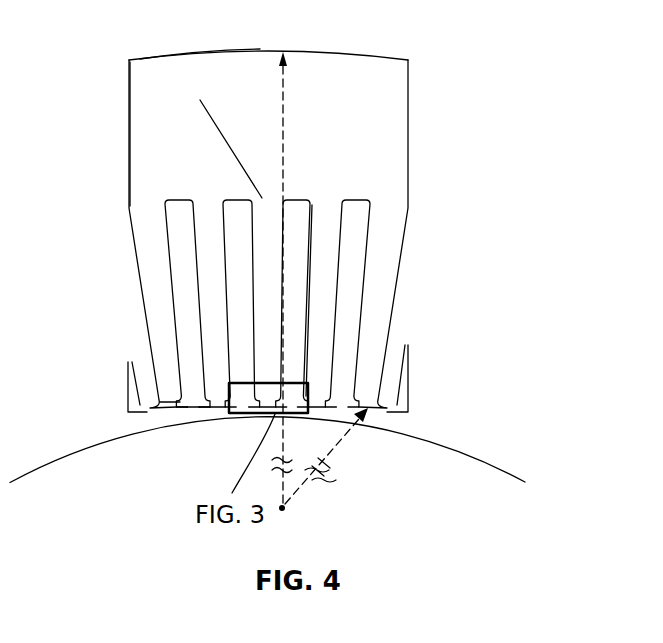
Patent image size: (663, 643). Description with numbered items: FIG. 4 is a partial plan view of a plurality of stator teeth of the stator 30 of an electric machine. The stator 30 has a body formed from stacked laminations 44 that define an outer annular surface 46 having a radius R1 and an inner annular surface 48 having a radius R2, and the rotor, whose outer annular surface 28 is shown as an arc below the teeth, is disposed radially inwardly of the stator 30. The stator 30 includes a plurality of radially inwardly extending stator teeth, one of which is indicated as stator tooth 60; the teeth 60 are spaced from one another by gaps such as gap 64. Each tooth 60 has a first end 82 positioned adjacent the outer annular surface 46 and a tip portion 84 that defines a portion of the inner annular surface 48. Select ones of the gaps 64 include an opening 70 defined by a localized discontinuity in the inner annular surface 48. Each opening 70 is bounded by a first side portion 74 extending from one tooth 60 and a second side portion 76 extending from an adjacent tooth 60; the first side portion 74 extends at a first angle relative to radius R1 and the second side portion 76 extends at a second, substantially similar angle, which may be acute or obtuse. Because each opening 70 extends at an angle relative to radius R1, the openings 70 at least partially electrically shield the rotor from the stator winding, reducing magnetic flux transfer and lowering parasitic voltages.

The outer annular surface 28 is at (501, 468).
The stator 30 is at (512, 135).
The stacked laminations 44 is at (193, 122).
The outer annular surface 46 is at (172, 58).
The inner annular surface 48 is at (170, 408).
The radially inwardly extending stator tooth 60 is at (240, 302).
The gap 64 is at (296, 292).
The opening 70 is at (197, 406).
The first side portion 74 is at (193, 402).
The second side portion 76 is at (205, 402).
The first end 82 is at (263, 200).
The tip portion 84 is at (260, 403).
The radius R1 is at (283, 88).
The radius R2 is at (336, 447).